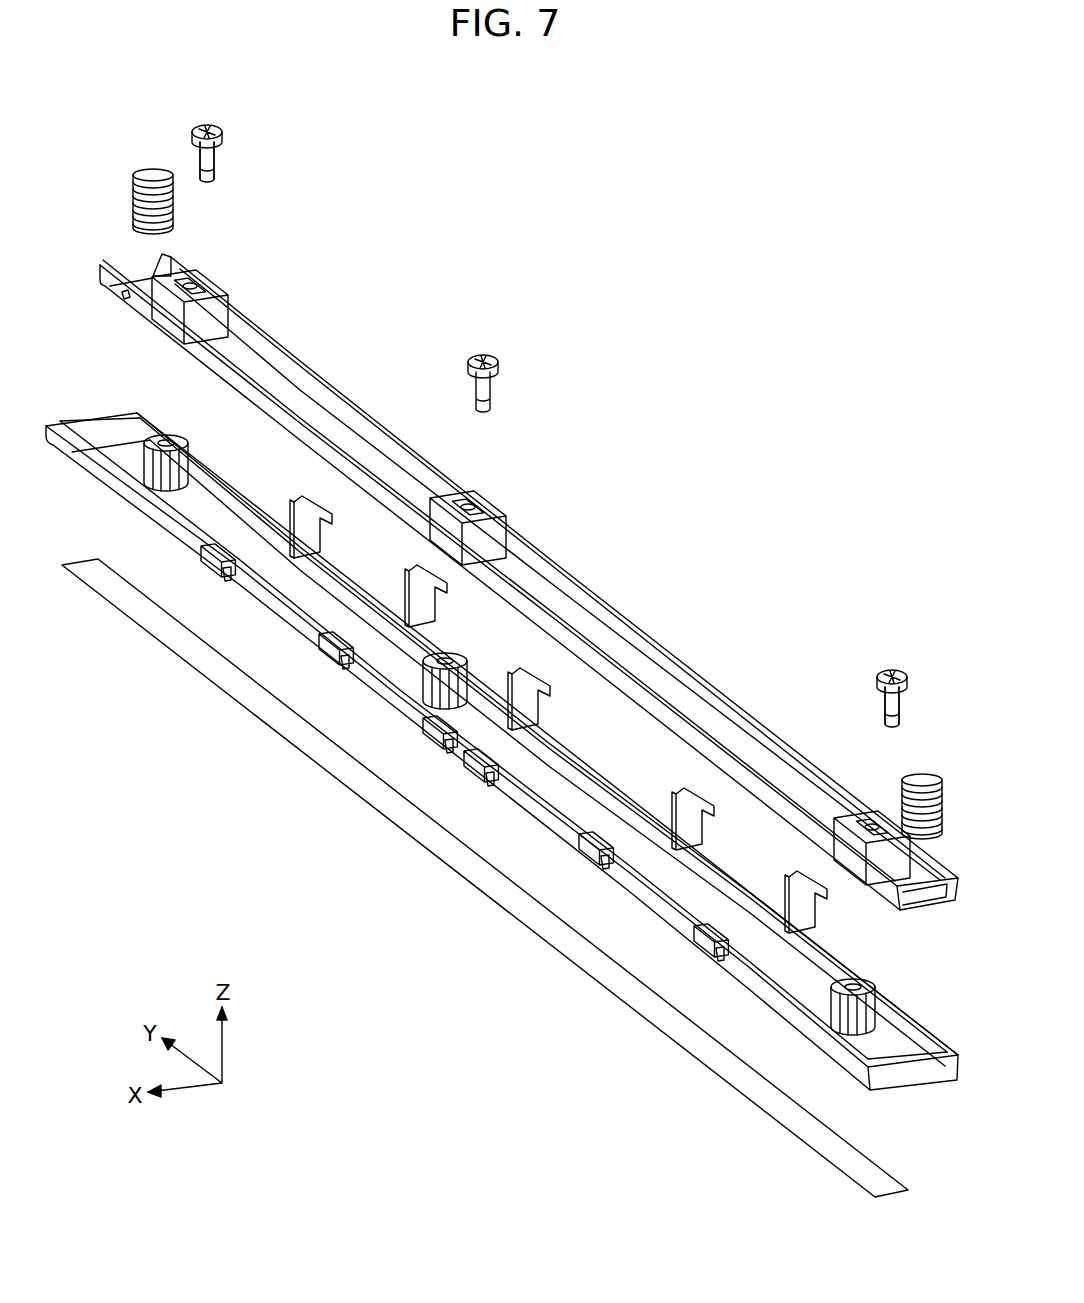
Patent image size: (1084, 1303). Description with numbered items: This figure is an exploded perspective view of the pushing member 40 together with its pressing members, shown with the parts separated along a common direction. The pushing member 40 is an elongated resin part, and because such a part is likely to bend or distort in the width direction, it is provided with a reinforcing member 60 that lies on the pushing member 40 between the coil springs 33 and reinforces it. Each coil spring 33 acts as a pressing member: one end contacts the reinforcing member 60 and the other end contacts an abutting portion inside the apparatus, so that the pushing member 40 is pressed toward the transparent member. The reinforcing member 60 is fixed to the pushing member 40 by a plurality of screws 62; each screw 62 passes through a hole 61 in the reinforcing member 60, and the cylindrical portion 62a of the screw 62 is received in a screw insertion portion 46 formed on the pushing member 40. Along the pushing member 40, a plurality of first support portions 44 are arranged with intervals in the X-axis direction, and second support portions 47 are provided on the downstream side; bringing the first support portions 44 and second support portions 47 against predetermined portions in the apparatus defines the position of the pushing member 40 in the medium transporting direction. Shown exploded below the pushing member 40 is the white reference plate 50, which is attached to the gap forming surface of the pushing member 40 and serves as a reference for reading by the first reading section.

The coil spring 33 is at (133, 198).
The pushing member 40 is at (95, 418).
The first support portion 44 is at (320, 650).
The screw insertion portion 46 is at (165, 442).
The second support portion 47 is at (326, 525).
The white reference plate 50 is at (577, 965).
The reinforcing member 60 is at (347, 397).
The hole 61 is at (190, 280).
The screw 62 is at (222, 132).
The cylindrical portion 62a is at (213, 158).